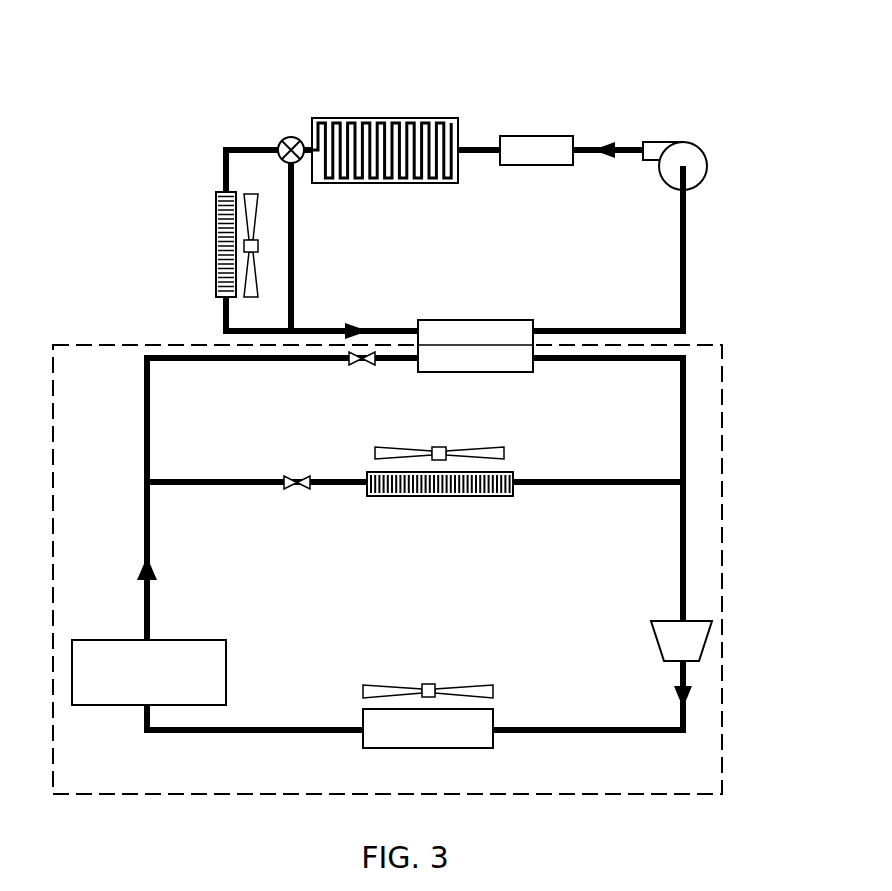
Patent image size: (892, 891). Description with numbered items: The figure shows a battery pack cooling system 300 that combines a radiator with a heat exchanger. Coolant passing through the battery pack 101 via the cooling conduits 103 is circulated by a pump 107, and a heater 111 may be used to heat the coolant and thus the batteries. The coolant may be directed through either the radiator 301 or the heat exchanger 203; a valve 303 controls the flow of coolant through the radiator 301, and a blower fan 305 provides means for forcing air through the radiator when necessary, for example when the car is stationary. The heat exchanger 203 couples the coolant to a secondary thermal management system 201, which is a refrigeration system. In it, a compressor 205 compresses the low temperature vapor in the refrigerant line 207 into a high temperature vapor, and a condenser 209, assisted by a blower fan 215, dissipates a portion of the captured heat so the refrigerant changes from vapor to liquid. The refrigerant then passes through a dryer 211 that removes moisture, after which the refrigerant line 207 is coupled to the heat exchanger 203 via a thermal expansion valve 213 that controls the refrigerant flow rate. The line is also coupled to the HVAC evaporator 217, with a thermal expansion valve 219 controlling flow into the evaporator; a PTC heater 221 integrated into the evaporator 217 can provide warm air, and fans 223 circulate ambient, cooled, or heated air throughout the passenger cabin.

The cooling system 300 is at (718, 74).
The battery pack 101 is at (372, 118).
The cooling conduits 103 is at (336, 135).
The heater 111 is at (525, 136).
The pump 107 is at (660, 162).
The valve 303 is at (283, 141).
The blower fan 305 is at (251, 194).
The radiator 301 is at (228, 293).
The secondary thermal management system 201 is at (728, 454).
The heat exchanger 203 is at (457, 320).
The thermal expansion valve 213 is at (353, 364).
The thermal expansion valve 219 is at (287, 489).
The HVAC evaporator 217 is at (366, 474).
The PTC heater 221 is at (402, 497).
The fans 223 is at (444, 447).
The dryer 211 is at (200, 639).
The condenser 209 is at (495, 719).
The blower fan 215 is at (426, 684).
The refrigerant line 207 is at (589, 733).
The compressor 205 is at (652, 630).